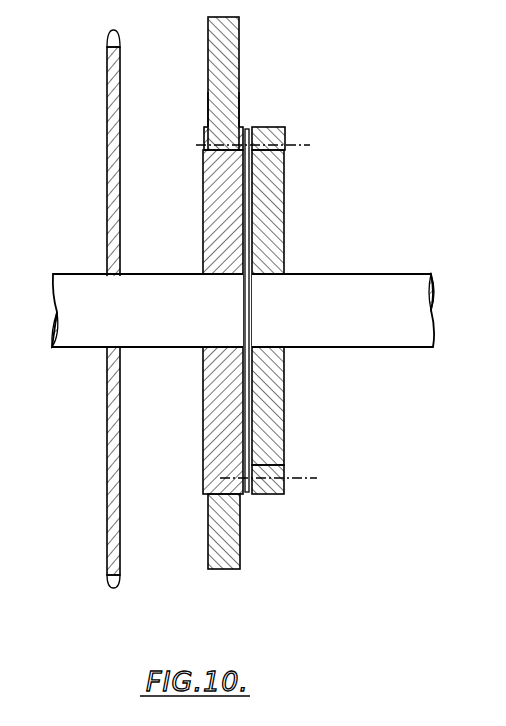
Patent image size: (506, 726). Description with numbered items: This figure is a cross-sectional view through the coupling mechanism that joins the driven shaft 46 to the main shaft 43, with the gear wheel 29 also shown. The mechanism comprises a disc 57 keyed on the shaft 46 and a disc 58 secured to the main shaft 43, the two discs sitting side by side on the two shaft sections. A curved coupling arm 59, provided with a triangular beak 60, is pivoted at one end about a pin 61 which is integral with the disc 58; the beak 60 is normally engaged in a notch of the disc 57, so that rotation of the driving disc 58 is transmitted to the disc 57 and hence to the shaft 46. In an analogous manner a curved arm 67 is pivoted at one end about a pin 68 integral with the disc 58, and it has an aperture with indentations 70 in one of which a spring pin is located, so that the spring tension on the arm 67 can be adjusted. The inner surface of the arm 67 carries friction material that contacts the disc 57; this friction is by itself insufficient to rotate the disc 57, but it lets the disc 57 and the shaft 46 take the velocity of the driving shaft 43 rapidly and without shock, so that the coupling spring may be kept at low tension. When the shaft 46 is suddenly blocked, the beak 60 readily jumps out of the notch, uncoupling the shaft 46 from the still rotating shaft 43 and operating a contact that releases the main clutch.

The gear wheel 29 is at (107, 223).
The main shaft 43 is at (325, 348).
The shaft 46 is at (167, 348).
The disc 57 is at (203, 444).
The disc 58 is at (284, 444).
The curved coupling arm 59 is at (208, 68).
The triangular beak 60 is at (219, 107).
The pin 61 is at (285, 146).
The curved arm 67 is at (216, 520).
The pin 68 is at (288, 478).
The indentations 70 is at (204, 141).